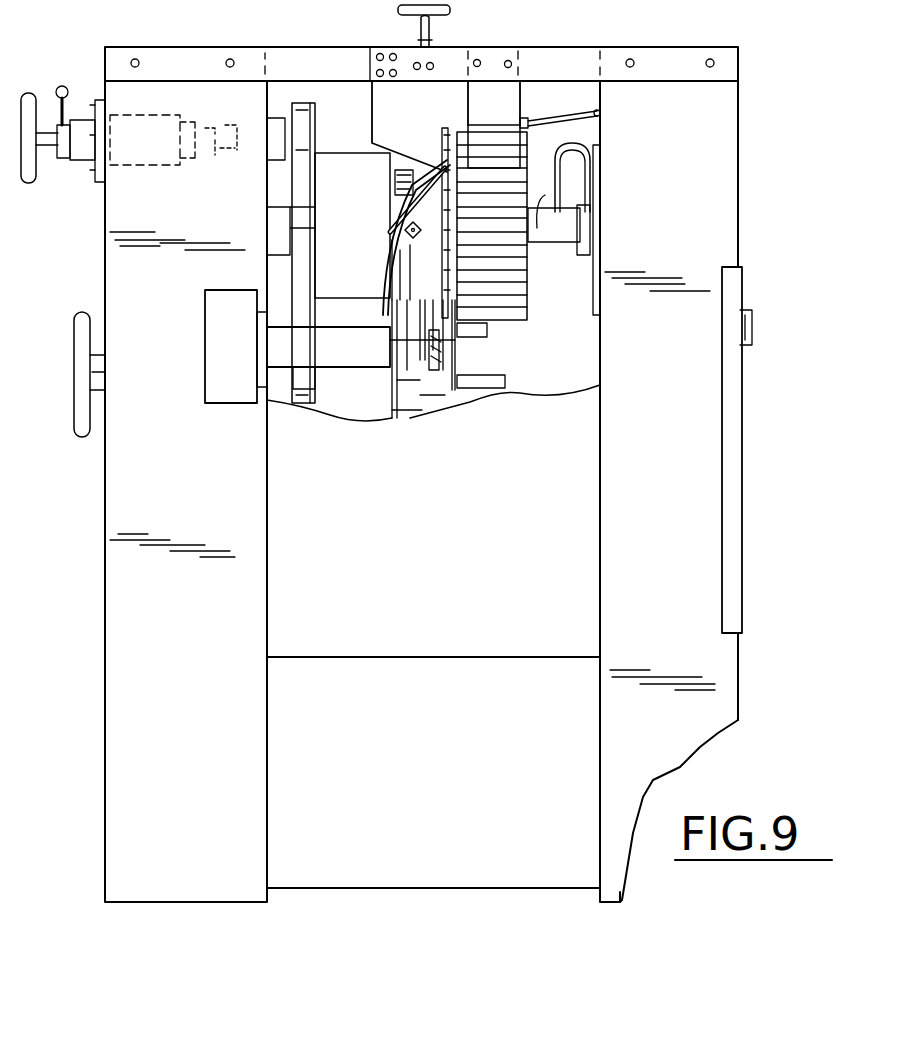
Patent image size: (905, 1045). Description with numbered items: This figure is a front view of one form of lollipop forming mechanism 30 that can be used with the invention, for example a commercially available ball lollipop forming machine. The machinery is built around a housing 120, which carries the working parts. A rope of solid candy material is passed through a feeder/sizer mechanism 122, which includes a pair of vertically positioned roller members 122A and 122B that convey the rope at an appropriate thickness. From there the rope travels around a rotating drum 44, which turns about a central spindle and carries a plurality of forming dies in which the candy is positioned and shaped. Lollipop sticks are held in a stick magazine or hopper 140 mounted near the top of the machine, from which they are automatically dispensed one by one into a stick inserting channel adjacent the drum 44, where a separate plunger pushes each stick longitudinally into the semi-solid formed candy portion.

The housing 120 is at (112, 487).
The lollipop forming mechanism 30 is at (745, 406).
The stick magazine or hopper 140 is at (515, 95).
The rotating drum 44 is at (513, 192).
The feeder/sizer mechanism 122 is at (448, 355).
The roller member 122A is at (430, 297).
The roller member 122B is at (437, 347).